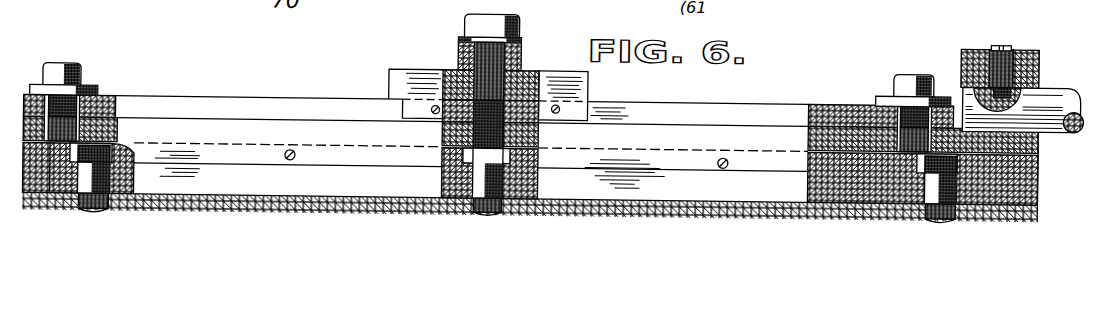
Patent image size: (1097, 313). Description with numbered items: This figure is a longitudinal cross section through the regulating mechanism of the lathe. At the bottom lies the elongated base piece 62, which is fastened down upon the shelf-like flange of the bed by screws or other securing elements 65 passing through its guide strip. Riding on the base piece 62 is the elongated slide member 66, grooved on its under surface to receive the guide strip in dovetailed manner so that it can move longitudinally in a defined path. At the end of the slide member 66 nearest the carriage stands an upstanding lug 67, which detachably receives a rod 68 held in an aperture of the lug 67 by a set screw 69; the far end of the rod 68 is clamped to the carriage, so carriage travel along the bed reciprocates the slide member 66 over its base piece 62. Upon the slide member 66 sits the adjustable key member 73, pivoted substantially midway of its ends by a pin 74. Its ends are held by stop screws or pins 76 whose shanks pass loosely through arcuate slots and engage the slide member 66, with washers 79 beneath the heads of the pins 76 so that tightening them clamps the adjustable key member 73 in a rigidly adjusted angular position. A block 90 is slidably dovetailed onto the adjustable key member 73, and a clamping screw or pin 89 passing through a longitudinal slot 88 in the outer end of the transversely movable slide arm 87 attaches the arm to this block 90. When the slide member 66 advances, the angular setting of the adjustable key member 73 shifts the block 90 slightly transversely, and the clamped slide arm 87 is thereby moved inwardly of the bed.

The base piece 62 is at (125, 145).
The securing elements 65 is at (98, 175).
The slide member 66 is at (667, 131).
The upstanding lug 67 is at (972, 45).
The rod 68 is at (1040, 96).
The set screw 69 is at (1019, 21).
The adjustable key member 73 is at (194, 106).
The pin 74 is at (481, 123).
The stop screws or pins 76 is at (77, 73).
The washers 79 is at (84, 96).
The operating slide arm 87 is at (514, 55).
The slot 88 is at (471, 48).
The clamping screw or pin 89 is at (486, 23).
The block 90 is at (394, 77).